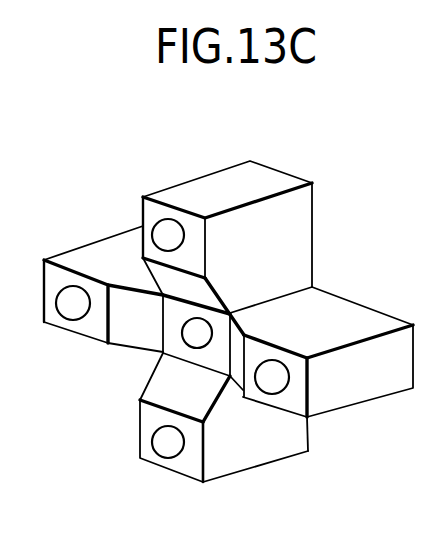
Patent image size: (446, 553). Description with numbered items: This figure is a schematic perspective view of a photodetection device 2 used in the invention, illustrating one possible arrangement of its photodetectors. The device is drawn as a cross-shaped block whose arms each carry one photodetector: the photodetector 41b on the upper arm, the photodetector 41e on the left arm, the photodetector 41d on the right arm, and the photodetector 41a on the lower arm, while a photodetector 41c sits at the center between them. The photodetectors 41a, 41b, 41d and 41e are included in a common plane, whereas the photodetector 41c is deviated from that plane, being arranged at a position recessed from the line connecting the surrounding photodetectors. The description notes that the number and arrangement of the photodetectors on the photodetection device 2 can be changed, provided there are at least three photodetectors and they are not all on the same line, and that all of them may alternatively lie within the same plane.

The photodetection device 2 is at (330, 282).
The photodetector 41a is at (172, 438).
The photodetector 41b is at (172, 236).
The photodetector 41c is at (185, 334).
The photodetector 41d is at (272, 380).
The photodetector 41e is at (77, 307).